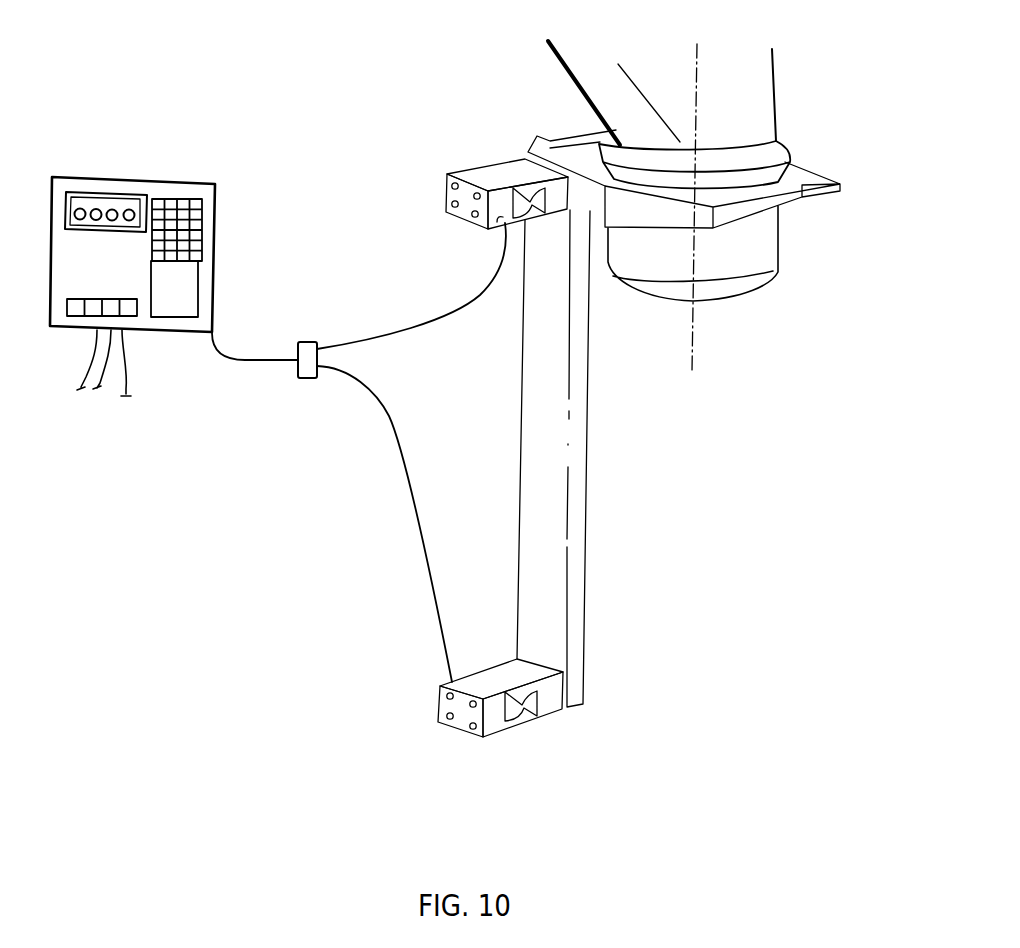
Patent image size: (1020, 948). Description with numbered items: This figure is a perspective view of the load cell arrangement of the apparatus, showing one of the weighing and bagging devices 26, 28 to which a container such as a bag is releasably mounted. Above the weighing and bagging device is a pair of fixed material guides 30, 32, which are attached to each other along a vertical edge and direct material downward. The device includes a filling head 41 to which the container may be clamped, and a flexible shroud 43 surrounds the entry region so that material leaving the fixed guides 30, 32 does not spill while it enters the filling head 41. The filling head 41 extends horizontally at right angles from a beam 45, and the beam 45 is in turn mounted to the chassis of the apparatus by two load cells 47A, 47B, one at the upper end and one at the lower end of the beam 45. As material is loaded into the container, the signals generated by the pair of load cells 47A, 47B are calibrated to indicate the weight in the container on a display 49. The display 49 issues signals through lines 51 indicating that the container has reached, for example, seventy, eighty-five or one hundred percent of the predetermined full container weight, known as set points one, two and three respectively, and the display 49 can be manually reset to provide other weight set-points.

The weighing and bagging device 26 is at (644, 403).
The weighing and bagging device 28 is at (700, 542).
The fixed material guide 30 is at (712, 189).
The fixed material guide 32 is at (752, 88).
The filling head 41 is at (765, 253).
The flexible shroud 43 is at (783, 148).
The beam 45 is at (577, 510).
The load cell 47A is at (482, 175).
The load cell 47B is at (518, 717).
The display 49 is at (182, 192).
The line 51 is at (98, 393).